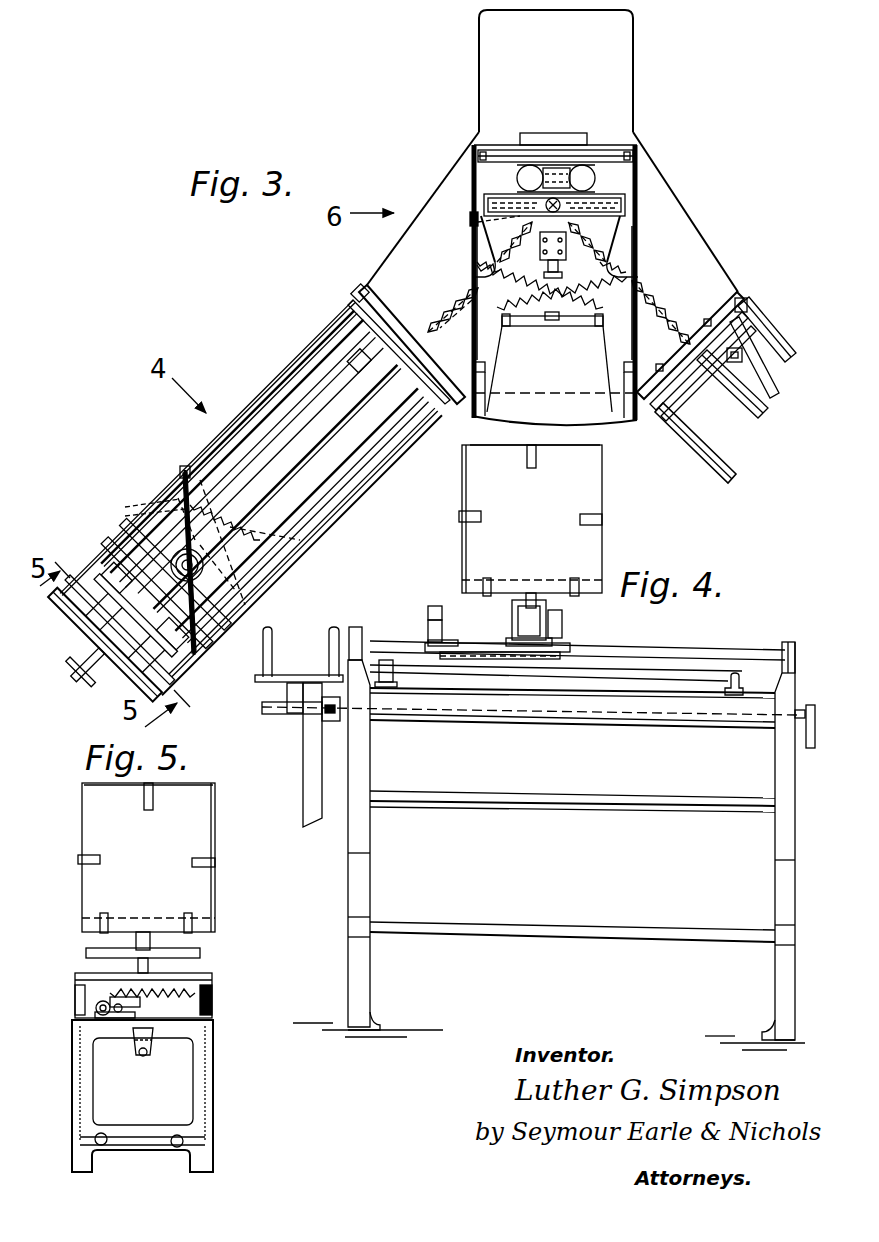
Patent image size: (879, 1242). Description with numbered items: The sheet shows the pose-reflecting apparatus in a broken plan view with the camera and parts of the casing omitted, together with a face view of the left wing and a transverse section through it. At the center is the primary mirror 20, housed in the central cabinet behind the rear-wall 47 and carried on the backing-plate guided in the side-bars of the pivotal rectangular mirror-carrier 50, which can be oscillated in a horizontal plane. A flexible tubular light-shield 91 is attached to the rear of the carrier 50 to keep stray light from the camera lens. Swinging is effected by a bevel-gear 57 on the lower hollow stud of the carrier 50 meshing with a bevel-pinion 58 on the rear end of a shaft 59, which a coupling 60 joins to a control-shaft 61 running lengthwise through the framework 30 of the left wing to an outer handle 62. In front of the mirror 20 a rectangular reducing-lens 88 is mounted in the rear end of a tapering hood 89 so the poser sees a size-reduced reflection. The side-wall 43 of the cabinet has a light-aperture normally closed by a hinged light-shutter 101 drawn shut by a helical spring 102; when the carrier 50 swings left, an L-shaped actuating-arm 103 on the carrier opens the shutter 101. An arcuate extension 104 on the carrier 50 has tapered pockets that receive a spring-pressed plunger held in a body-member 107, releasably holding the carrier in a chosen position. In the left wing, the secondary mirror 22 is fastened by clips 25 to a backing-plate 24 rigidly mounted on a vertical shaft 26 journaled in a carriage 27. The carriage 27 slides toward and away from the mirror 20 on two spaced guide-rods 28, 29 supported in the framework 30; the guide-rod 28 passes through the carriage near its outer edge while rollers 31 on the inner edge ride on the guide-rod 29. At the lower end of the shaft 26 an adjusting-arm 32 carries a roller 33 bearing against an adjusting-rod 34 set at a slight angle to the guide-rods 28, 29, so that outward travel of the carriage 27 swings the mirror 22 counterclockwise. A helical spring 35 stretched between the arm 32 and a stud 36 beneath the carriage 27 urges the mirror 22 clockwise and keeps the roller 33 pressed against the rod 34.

In FIG. 3, the primary mirror 20 is at (628, 192).
In FIG. 3, the side-wall 43 is at (480, 190).
In FIG. 3, the rear-wall 47 is at (605, 152).
In FIG. 3, the flexible tubular light-shield 91 is at (517, 178).
In FIG. 3, the bevel-gear 57 is at (595, 178).
In FIG. 3, the mirror-carrier 50 is at (626, 204).
In FIG. 3, the bevel-pinion 58 is at (470, 219).
In FIG. 3, the light-shutter 101 is at (474, 238).
In FIG. 3, the L-shaped actuating-arm 103 is at (510, 296).
In FIG. 3, the helical spring 102 is at (516, 292).
In FIG. 3, the arcuate extension 104 is at (518, 252).
In FIG. 3, the body-member 107 is at (566, 252).
In FIG. 3, the shaft 59 is at (470, 288).
In FIG. 4, the shaft 59 is at (285, 712).
In FIG. 3, the coupling 60 is at (437, 318).
In FIG. 4, the coupling 60 is at (333, 722).
In FIG. 3, the reducing-lens 88 is at (540, 326).
In FIG. 3, the hood 89 is at (494, 372).
In FIG. 3, the guide-rod 28 is at (262, 398).
In FIG. 4, the guide-rod 28 is at (625, 655).
In FIG. 3, the adjusting-rod 34 is at (292, 412).
In FIG. 4, the adjusting-rod 34 is at (672, 670).
In FIG. 3, the framework 30 is at (338, 520).
In FIG. 4, the framework 30 is at (370, 767).
In FIG. 5, the framework 30 is at (198, 1068).
In FIG. 3, the guide-rod 29 is at (355, 485).
In FIG. 5, the guide-rod 29 is at (205, 998).
In FIG. 3, the control-shaft 61 is at (370, 392).
In FIG. 4, the control-shaft 61 is at (578, 727).
In FIG. 5, the control-shaft 61 is at (140, 1058).
In FIG. 3, the secondary mirror 22 is at (196, 600).
In FIG. 4, the secondary mirror 22 is at (462, 492).
In FIG. 5, the secondary mirror 22 is at (215, 820).
In FIG. 3, the backing-plate 24 is at (182, 490).
In FIG. 4, the backing-plate 24 is at (585, 496).
In FIG. 5, the backing-plate 24 is at (95, 818).
In FIG. 3, the clips 25 is at (183, 474).
In FIG. 4, the clips 25 is at (536, 455).
In FIG. 5, the clips 25 is at (155, 795).
In FIG. 4, the vertical shaft 26 is at (516, 612).
In FIG. 5, the vertical shaft 26 is at (150, 948).
In FIG. 3, the carriage 27 is at (284, 565).
In FIG. 4, the carriage 27 is at (563, 645).
In FIG. 5, the rollers 31 is at (212, 985).
In FIG. 3, the adjusting-arm 32 is at (140, 511).
In FIG. 3, the roller 33 is at (125, 505).
In FIG. 4, the roller 33 is at (470, 668).
In FIG. 3, the helical spring 35 is at (255, 580).
In FIG. 5, the helical spring 35 is at (195, 1006).
In FIG. 3, the stud 36 is at (298, 543).
In FIG. 3, the handle 62 is at (58, 670).
In FIG. 4, the handle 62 is at (810, 705).